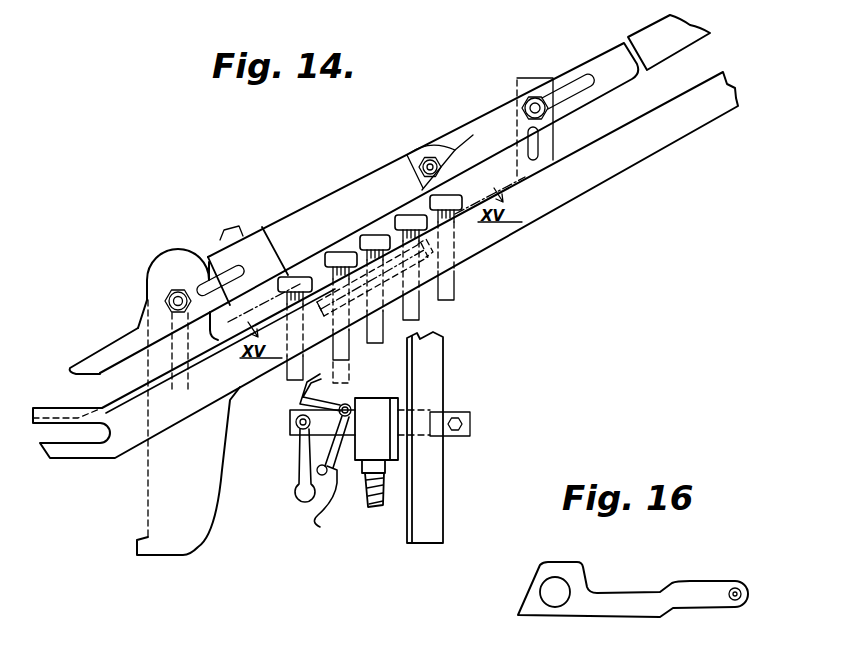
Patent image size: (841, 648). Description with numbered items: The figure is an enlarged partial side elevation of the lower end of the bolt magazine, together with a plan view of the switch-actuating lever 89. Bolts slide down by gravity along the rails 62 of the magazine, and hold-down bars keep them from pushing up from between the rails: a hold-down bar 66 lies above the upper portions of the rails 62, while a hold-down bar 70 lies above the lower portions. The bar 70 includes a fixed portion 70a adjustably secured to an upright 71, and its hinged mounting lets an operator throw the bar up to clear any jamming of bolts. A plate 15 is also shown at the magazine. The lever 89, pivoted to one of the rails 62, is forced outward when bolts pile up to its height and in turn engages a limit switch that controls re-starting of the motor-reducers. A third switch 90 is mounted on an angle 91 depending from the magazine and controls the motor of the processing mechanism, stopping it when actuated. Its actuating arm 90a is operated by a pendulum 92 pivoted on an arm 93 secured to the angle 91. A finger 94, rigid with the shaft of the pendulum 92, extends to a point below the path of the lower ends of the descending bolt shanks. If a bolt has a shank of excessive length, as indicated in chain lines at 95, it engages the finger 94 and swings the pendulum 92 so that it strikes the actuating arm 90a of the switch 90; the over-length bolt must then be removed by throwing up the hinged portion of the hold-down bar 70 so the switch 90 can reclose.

In FIG. 14, the rails 62 is at (702, 117).
In FIG. 14, the plate 15 is at (598, 173).
In FIG. 14, the hold-down bar 70 is at (473, 135).
In FIG. 14, the fixed portion 70a is at (315, 218).
In FIG. 14, the hold-down bar 66 is at (652, 30).
In FIG. 14, the upright 71 is at (172, 257).
In FIG. 14, the over-length bolt 95 is at (349, 371).
In FIG. 14, the lever 89 is at (420, 305).
In FIG. 16, the lever 89 is at (620, 607).
In FIG. 14, the angle 91 is at (433, 362).
In FIG. 14, the switch 90 is at (371, 405).
In FIG. 14, the arm 93 is at (292, 421).
In FIG. 14, the finger 94 is at (300, 395).
In FIG. 14, the pendulum 92 is at (300, 457).
In FIG. 14, the actuating arm 90a is at (338, 475).